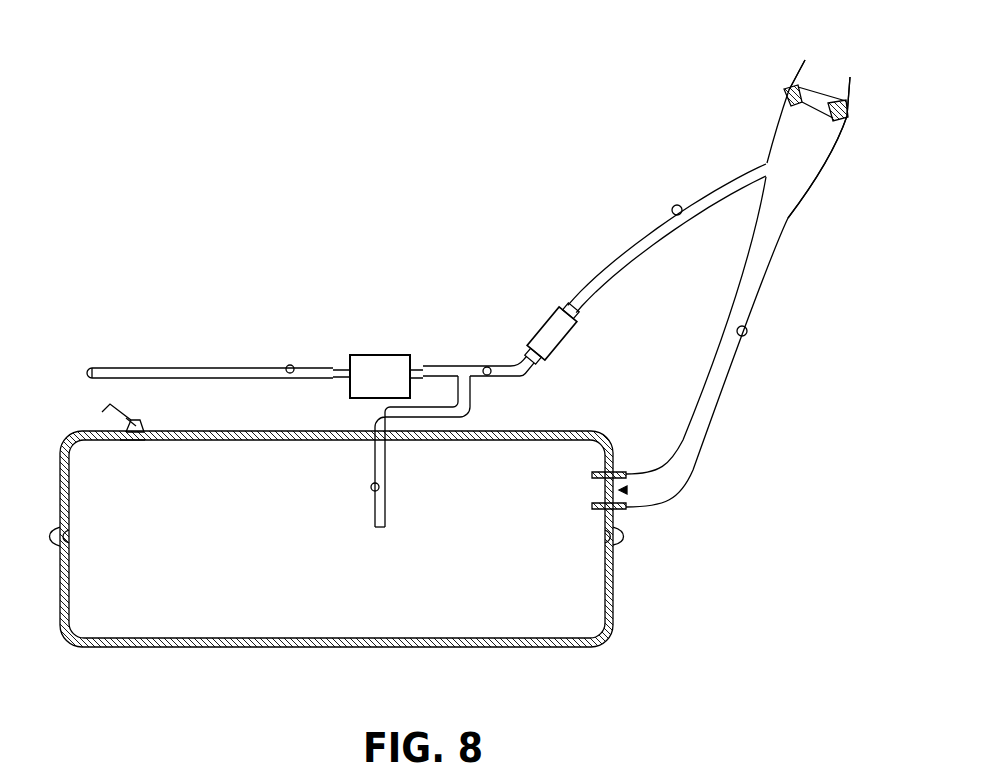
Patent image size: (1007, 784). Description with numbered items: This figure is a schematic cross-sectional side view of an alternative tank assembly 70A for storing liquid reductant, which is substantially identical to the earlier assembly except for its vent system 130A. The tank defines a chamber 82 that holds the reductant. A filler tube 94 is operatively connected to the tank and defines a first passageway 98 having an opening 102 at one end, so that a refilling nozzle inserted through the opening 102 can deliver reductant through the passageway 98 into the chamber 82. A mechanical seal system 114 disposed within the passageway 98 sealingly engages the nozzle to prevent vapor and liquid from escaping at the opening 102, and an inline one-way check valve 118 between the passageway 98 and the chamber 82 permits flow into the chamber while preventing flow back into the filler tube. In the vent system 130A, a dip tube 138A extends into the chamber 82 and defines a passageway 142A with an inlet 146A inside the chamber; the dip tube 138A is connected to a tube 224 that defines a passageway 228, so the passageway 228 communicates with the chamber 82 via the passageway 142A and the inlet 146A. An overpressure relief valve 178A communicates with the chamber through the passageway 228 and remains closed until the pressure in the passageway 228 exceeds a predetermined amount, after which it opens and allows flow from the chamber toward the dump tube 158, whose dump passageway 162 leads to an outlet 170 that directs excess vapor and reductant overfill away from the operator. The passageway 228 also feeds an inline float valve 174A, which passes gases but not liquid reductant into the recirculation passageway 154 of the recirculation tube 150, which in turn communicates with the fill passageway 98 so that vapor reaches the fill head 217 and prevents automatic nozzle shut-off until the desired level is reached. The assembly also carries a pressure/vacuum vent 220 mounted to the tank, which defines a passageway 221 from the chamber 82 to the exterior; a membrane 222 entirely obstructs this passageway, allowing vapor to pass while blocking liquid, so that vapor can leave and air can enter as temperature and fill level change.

The tank assembly 70A is at (240, 249).
The chamber 82 is at (182, 531).
The filler tube 94 is at (718, 433).
The first passageway 98 is at (748, 333).
The opening 102 is at (823, 81).
The mechanical seal system 114 is at (786, 100).
The one-way check valve 118 is at (628, 490).
The vent system 130A is at (471, 251).
The dip tube 138A is at (386, 470).
The passageway 142A is at (372, 488).
The inlet 146A is at (381, 527).
The recirculation tube 150 is at (635, 228).
The recirculation passageway 154 is at (676, 206).
The dump tube 158 is at (202, 367).
The dump passageway 162 is at (290, 365).
The outlet 170 is at (90, 373).
The inline float valve 174A is at (548, 330).
The overpressure relief valve 178A is at (380, 360).
The fill head 217 is at (840, 134).
The pressure/vacuum vent 220 is at (131, 420).
The passageway 221 is at (128, 433).
The membrane 222 is at (136, 428).
The tube 224 is at (460, 362).
The passageway 228 is at (497, 375).